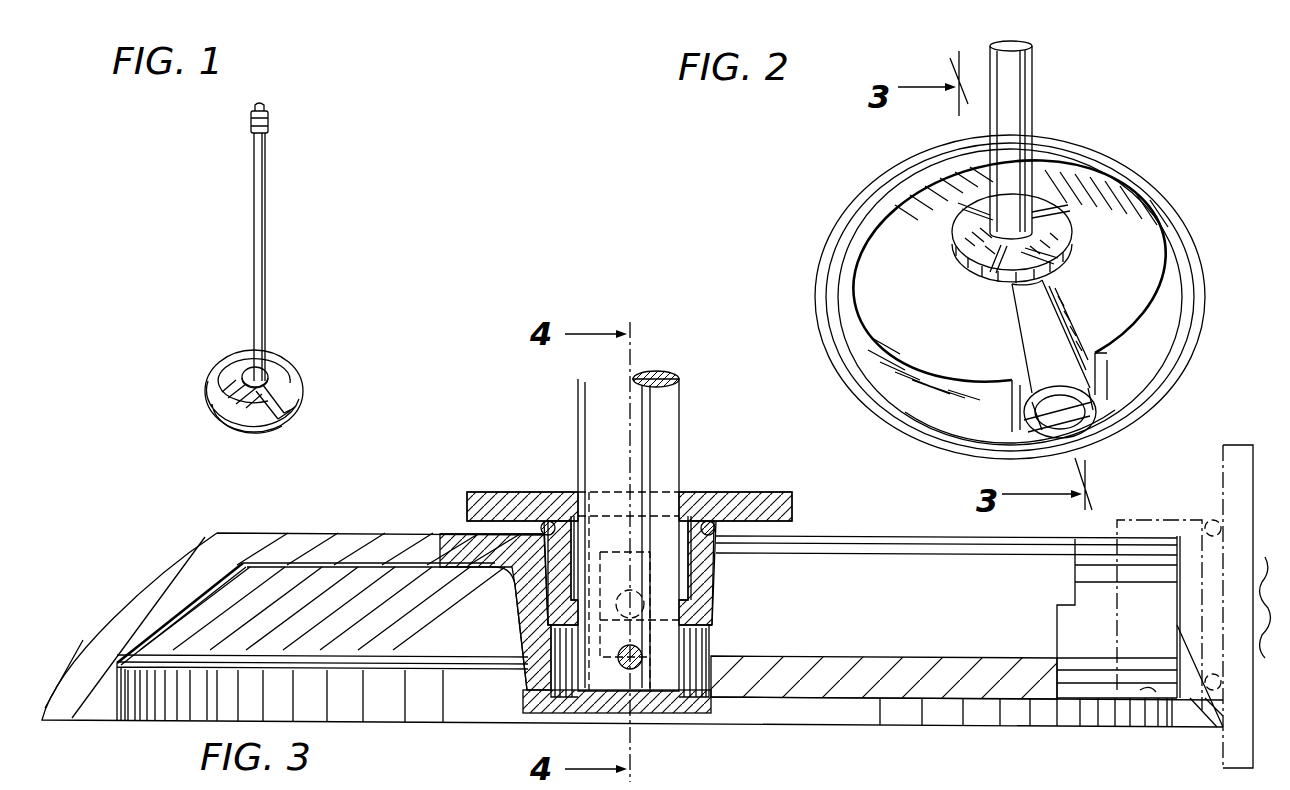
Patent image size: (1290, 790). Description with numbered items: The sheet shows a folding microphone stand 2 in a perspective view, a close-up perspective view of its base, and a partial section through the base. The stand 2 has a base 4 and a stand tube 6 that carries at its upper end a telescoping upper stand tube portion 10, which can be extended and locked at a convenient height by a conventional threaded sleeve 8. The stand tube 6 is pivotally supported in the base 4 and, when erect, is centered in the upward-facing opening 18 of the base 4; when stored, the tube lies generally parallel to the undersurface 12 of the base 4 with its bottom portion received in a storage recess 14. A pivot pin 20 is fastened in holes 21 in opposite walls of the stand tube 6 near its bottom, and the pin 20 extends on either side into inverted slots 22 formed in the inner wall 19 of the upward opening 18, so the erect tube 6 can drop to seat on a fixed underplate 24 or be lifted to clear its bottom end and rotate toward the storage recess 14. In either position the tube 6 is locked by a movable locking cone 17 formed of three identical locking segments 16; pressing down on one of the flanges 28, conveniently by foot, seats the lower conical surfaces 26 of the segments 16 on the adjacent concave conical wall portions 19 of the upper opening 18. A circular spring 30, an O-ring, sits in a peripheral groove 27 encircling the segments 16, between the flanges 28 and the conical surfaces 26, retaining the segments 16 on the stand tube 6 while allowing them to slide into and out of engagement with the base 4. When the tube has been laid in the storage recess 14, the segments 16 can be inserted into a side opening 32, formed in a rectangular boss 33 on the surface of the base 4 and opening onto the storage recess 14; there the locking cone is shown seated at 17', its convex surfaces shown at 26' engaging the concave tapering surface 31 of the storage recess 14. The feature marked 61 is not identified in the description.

In FIG. 1, the folding microphone stand 2 is at (250, 261).
In FIG. 2, the folding microphone stand 2 is at (1012, 263).
In FIG. 1, the base 4 is at (288, 383).
In FIG. 2, the base 4 is at (1139, 213).
In FIG. 3, the base 4 is at (372, 534).
In FIG. 1, the stand tube 6 is at (266, 226).
In FIG. 2, the stand tube 6 is at (1020, 67).
In FIG. 3, the stand tube 6 is at (680, 407).
In FIG. 1, the threaded sleeve 8 is at (269, 126).
In FIG. 1, the upper stand tube portion 10 is at (267, 107).
In FIG. 3, the undersurface 12 is at (840, 728).
In FIG. 2, the storage recess 14 is at (1040, 340).
In FIG. 2, the locking segments 16 is at (1047, 212).
In FIG. 3, the locking segments 16 is at (557, 495).
In FIG. 1, the locking cone 17 is at (227, 380).
In FIG. 2, the locking cone 17 is at (982, 238).
In FIG. 3, the locking cone 17 is at (632, 566).
In FIG. 3, the locking cone in storage position 17' is at (1234, 592).
In FIG. 3, the upward-facing opening 18 is at (560, 677).
In FIG. 3, the inner wall 19 is at (714, 582).
In FIG. 3, the pivot pin 20 is at (675, 690).
In FIG. 3, the holes 21 is at (623, 671).
In FIG. 3, the inverted slots 22 is at (709, 641).
In FIG. 3, the fixed underplate 24 is at (652, 705).
In FIG. 3, the lower conical surfaces 26 is at (504, 628).
In FIG. 3, the lower conical surfaces in storage position 26' is at (1169, 600).
In FIG. 3, the peripheral groove 27 is at (546, 520).
In FIG. 3, the flanges 28 is at (470, 495).
In FIG. 3, the circular spring 30 is at (795, 536).
In FIG. 2, the concave tapering surface 31 is at (1084, 441).
In FIG. 3, the concave tapering surface 31 is at (1151, 689).
In FIG. 2, the side opening 32 is at (1079, 426).
In FIG. 2, the rectangular boss 33 is at (1118, 372).
In FIG. 3, the wall section 61 is at (1266, 567).